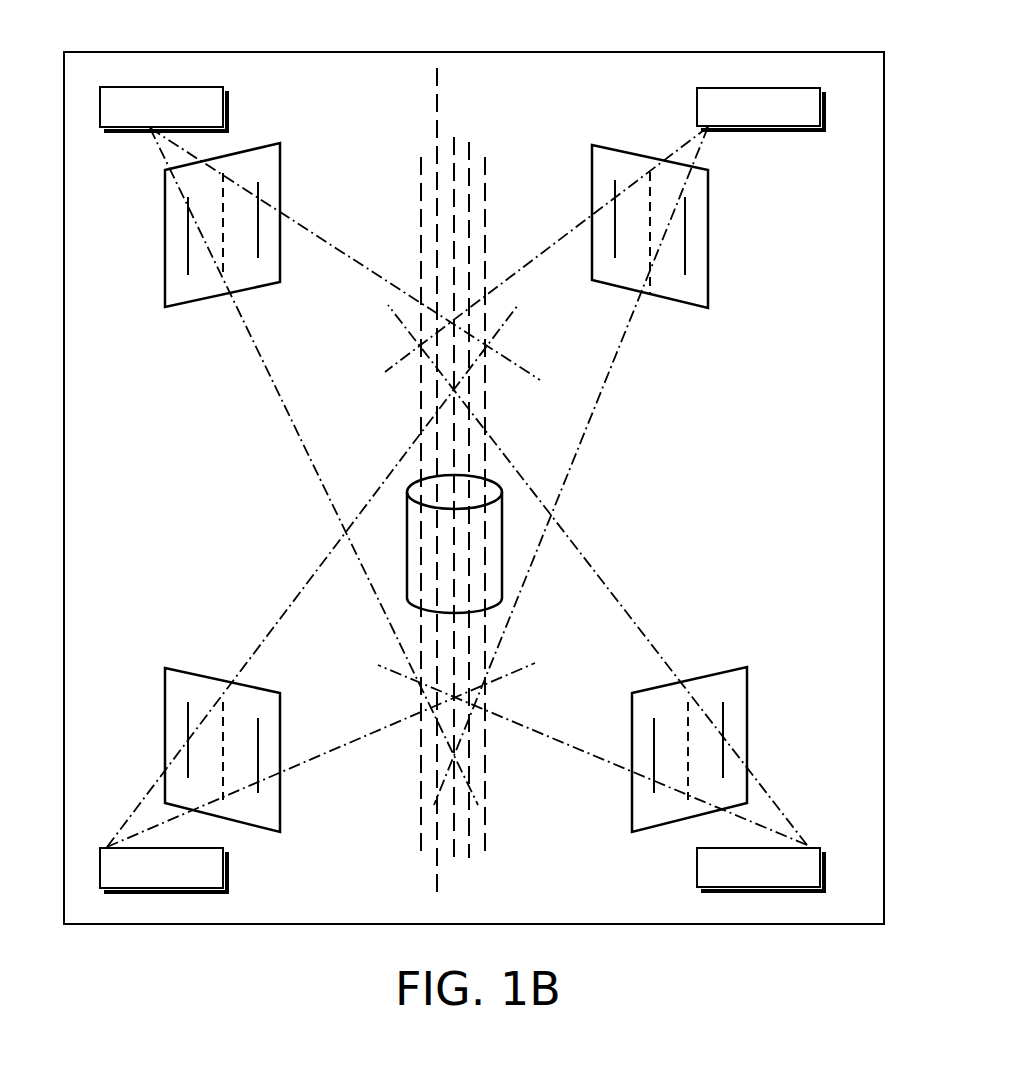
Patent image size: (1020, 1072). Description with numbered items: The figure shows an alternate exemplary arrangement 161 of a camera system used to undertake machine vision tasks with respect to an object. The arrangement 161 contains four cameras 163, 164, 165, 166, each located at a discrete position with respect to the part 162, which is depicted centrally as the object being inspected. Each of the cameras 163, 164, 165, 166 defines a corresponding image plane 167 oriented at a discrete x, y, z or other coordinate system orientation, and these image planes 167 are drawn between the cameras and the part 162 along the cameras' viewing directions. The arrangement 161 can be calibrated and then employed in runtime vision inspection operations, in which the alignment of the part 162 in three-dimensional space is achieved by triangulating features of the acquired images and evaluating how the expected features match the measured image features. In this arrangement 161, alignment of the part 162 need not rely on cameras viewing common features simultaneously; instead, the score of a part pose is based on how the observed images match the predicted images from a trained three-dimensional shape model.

The arrangement of a camera system 161 is at (809, 45).
The part 162 is at (503, 594).
The camera 163 is at (225, 116).
The camera 164 is at (780, 129).
The camera 165 is at (697, 870).
The camera 166 is at (227, 878).
The image plane 167 is at (273, 192).